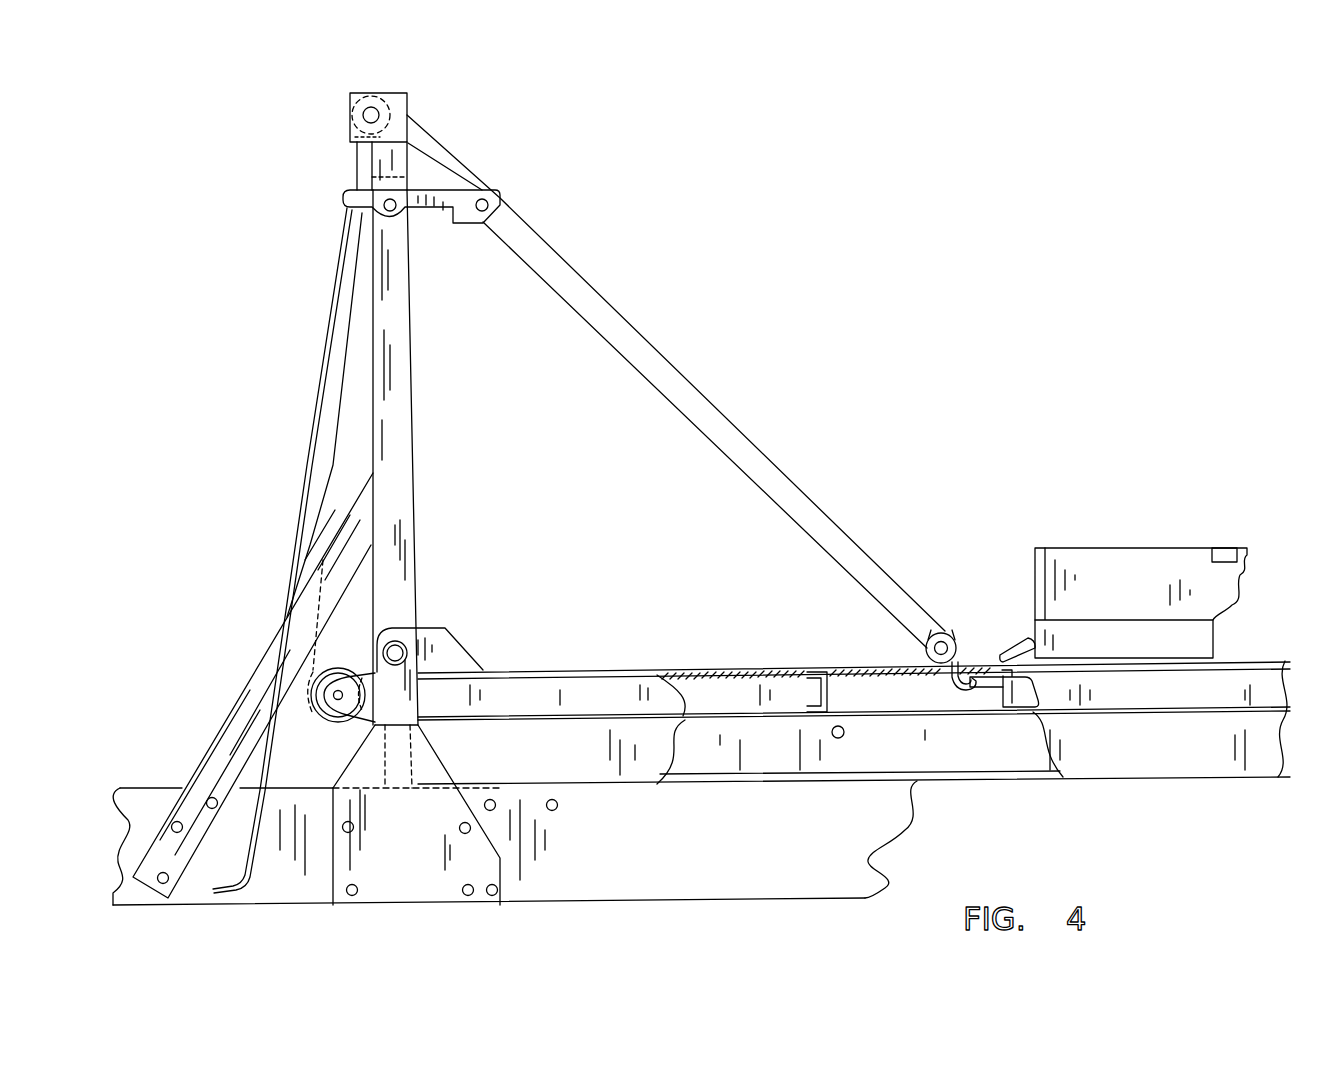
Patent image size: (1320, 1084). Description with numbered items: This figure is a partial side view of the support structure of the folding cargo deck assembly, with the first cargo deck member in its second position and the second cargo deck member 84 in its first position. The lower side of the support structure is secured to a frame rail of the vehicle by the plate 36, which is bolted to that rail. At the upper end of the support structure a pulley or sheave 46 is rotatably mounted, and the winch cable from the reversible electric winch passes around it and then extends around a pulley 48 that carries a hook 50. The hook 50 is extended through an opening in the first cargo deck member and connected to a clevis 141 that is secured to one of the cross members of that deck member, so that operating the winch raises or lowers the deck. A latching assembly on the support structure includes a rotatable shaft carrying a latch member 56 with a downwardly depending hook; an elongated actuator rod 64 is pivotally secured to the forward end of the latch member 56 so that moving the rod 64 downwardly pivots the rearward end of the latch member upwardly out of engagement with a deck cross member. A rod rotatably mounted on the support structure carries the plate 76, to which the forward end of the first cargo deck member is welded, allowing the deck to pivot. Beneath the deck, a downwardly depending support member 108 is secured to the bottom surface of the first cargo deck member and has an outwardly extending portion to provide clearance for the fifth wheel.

The plate 36 is at (410, 876).
The pulley or sheave 46 is at (385, 98).
The pulley 48 is at (939, 632).
The hook 50 is at (947, 690).
The latch member 56 is at (450, 207).
The actuator rod 64 is at (300, 514).
The plate 76 is at (452, 630).
The second cargo deck member 84 is at (1162, 548).
The support member 108 is at (572, 688).
The clevis 141 is at (979, 688).